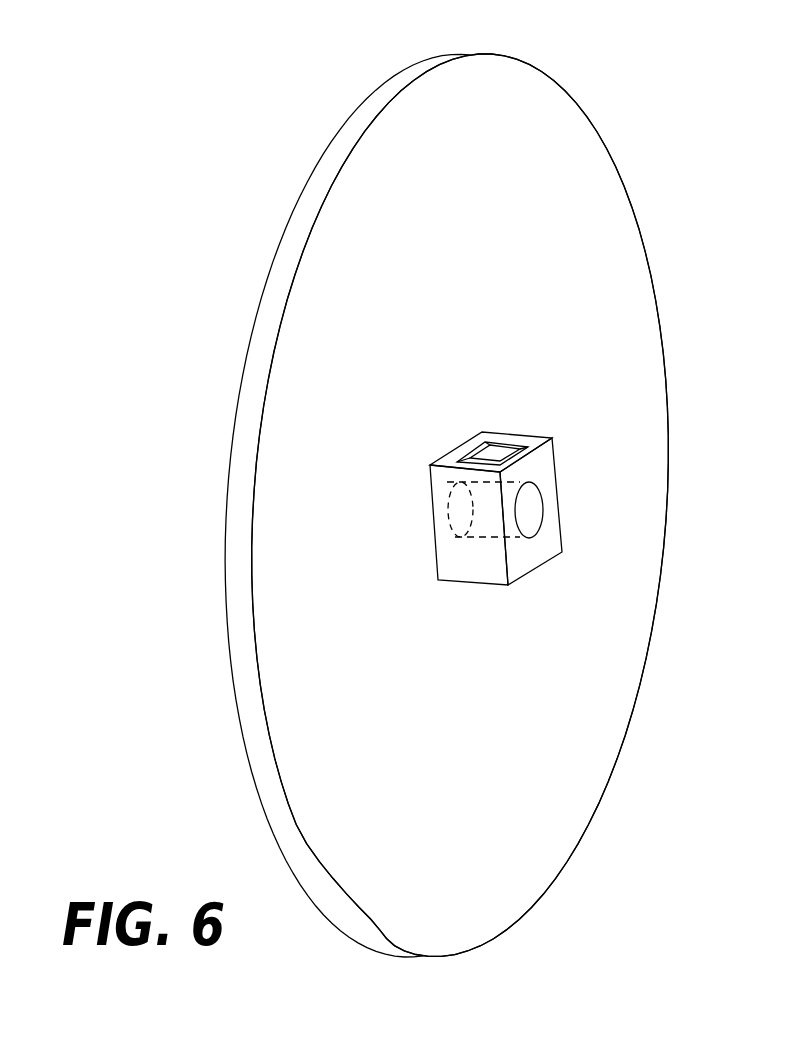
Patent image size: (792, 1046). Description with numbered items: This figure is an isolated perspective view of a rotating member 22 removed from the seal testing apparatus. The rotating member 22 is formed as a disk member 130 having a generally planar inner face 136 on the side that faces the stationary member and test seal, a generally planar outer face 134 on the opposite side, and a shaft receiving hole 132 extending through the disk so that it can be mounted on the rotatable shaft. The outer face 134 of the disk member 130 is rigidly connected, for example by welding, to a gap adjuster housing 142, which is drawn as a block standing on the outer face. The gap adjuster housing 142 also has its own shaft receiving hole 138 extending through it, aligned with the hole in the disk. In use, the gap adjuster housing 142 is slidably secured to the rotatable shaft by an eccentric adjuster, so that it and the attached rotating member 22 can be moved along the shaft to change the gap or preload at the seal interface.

The rotating member 22 is at (202, 105).
The disk member 130 is at (463, 247).
The shaft receiving hole 132 is at (447, 508).
The outer face 134 is at (660, 330).
The inner face 136 is at (270, 270).
The shaft receiving hole 138 is at (540, 512).
The gap adjuster housing 142 is at (465, 568).